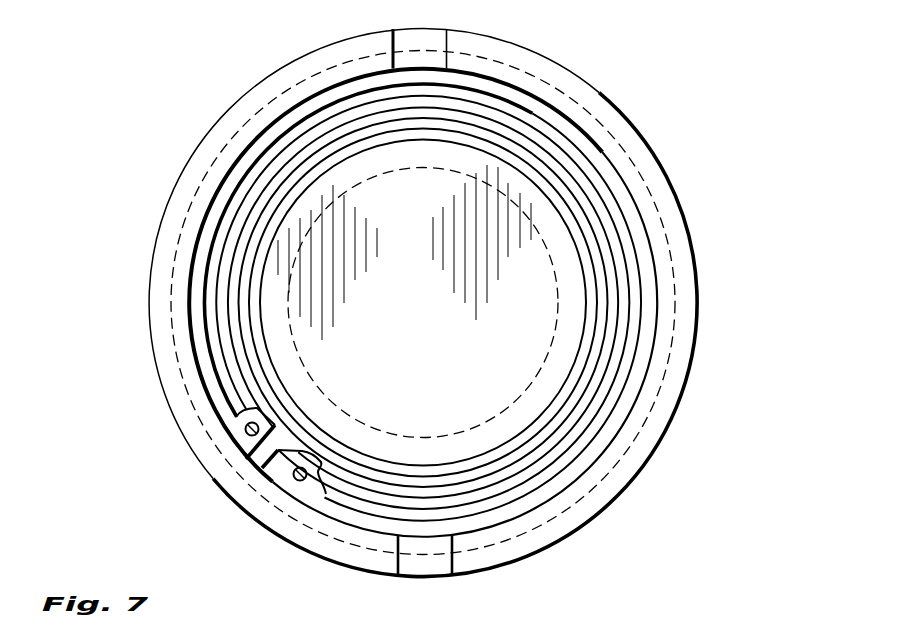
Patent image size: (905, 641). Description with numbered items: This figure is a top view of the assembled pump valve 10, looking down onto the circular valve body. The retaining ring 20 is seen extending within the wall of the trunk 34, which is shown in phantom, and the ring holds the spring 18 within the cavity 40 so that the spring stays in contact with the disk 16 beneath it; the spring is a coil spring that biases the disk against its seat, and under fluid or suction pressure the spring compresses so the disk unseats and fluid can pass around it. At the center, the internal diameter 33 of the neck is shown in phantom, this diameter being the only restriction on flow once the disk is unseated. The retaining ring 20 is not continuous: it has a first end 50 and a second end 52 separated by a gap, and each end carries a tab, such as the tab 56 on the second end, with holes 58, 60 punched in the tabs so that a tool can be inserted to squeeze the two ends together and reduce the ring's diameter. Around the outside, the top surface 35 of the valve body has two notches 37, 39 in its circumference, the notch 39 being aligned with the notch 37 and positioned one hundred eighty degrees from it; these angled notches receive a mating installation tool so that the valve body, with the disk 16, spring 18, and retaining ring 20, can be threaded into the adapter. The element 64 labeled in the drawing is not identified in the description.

The pump valve 10 is at (174, 97).
The disk 16 is at (536, 193).
The spring 18 is at (240, 213).
The retaining ring 20 is at (652, 335).
The internal diameter 33 is at (538, 376).
The trunk 34 is at (683, 186).
The top surface 35 is at (694, 245).
The notch 37 is at (434, 556).
The notch 39 is at (440, 44).
The cavity 40 is at (187, 262).
The first end 50 is at (262, 492).
The second end 52 is at (245, 472).
The tab 56 is at (268, 421).
The hole 58 is at (296, 484).
The hole 60 is at (247, 438).
The terminal tab 64 is at (309, 466).